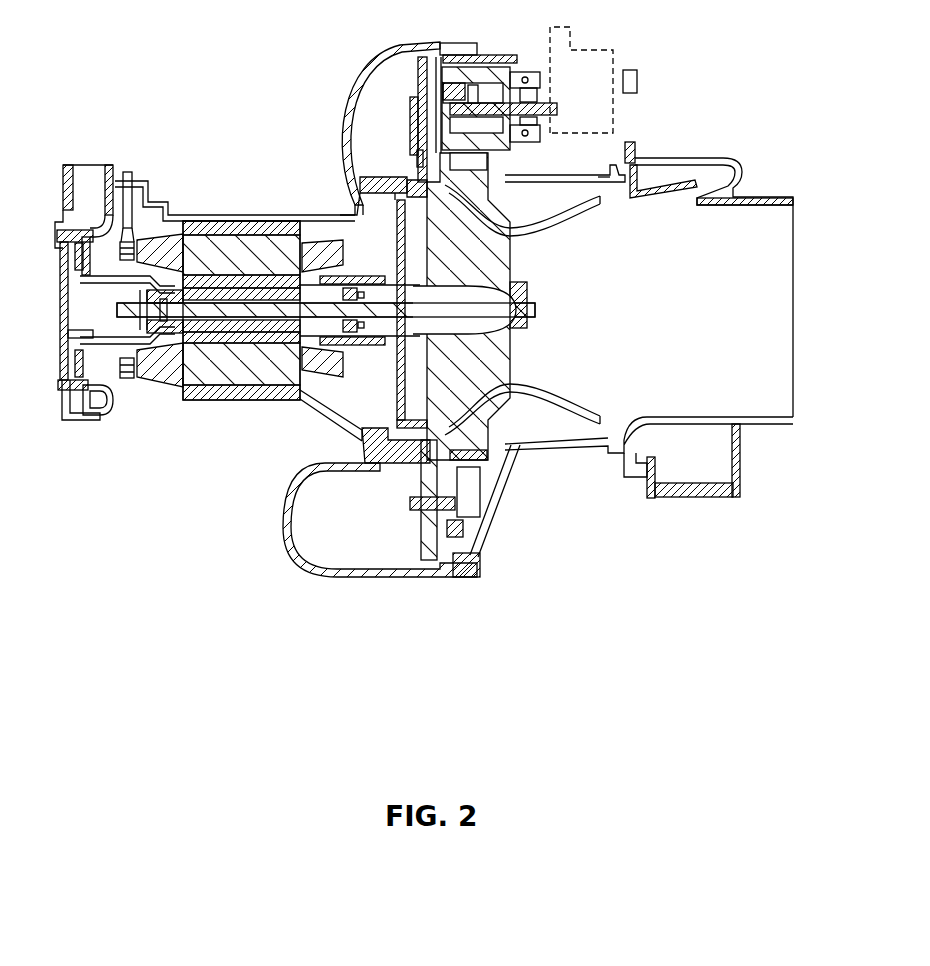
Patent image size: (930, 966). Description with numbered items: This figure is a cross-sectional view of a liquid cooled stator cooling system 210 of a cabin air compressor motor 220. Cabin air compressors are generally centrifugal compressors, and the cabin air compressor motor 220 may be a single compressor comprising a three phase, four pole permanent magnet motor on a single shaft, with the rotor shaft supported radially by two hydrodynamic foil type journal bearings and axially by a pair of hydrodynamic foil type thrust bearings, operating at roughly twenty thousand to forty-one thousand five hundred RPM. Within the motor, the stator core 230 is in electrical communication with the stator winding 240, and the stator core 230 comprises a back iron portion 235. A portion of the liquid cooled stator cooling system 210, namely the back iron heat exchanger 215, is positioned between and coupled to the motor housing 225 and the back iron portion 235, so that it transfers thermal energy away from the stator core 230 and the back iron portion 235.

The liquid cooled stator cooling system 210 is at (122, 132).
The back iron heat exchanger 215 is at (262, 230).
The cabin air compressor motor 220 is at (285, 230).
The motor housing 225 is at (176, 220).
The stator core 230 is at (185, 378).
The back iron portion 235 is at (293, 237).
The stator winding 240 is at (260, 290).